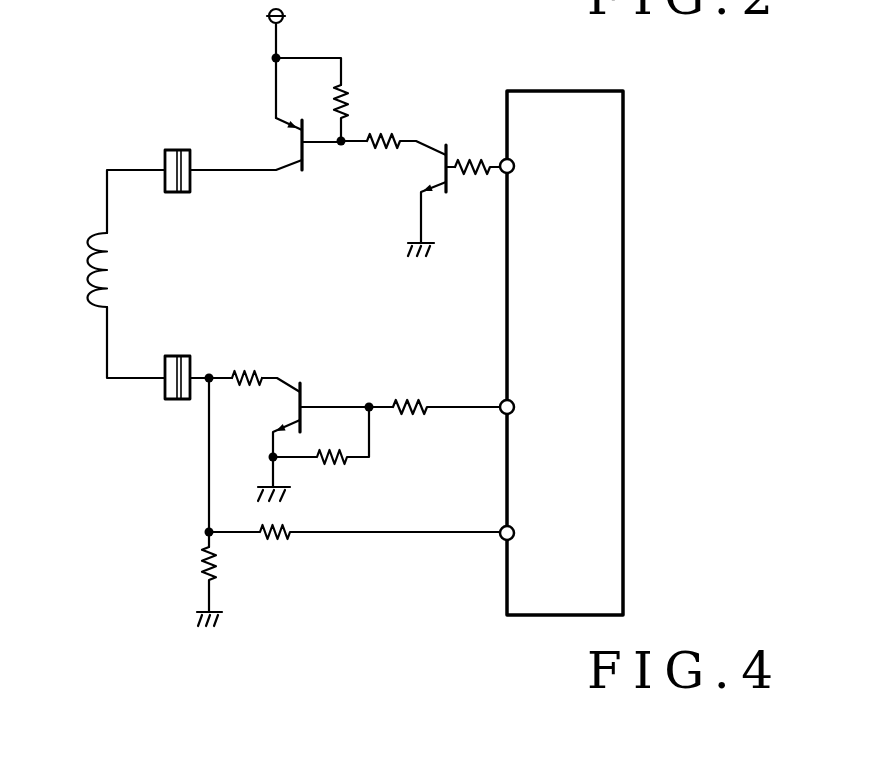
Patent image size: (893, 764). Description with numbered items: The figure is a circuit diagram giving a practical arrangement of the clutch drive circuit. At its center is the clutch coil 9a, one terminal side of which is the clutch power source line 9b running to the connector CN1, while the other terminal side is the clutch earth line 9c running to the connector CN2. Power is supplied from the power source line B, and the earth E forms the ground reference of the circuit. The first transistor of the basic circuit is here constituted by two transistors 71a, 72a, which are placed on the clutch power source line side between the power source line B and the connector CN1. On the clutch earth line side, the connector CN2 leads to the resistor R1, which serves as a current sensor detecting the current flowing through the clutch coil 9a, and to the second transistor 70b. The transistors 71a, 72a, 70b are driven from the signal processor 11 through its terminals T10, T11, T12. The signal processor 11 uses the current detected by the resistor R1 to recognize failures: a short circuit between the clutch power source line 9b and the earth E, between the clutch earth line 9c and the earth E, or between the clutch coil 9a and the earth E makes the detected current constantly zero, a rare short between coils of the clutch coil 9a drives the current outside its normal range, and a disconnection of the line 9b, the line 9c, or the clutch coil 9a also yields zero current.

The clutch coil 9a is at (88, 270).
The clutch power source line 9b is at (129, 167).
The clutch earth line 9c is at (124, 380).
The connector CN1 is at (191, 182).
The connector CN2 is at (191, 357).
The resistor R1 is at (247, 368).
The transistor 71a is at (286, 143).
The transistor 72a is at (435, 165).
The second transistor 70b is at (292, 400).
The terminal T10 is at (504, 160).
The terminal T11 is at (504, 540).
The terminal T12 is at (504, 415).
The signal processor 11 is at (625, 125).
The power source line B is at (268, 16).
The earth E is at (192, 620).